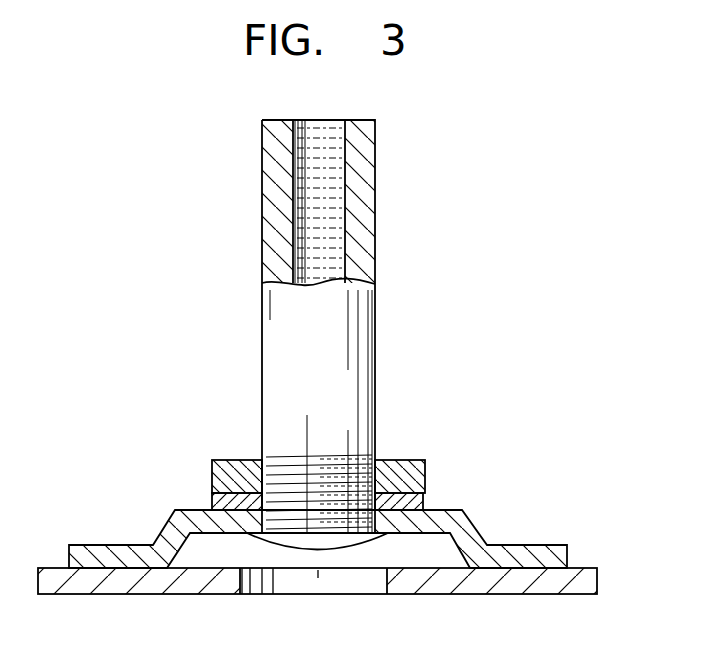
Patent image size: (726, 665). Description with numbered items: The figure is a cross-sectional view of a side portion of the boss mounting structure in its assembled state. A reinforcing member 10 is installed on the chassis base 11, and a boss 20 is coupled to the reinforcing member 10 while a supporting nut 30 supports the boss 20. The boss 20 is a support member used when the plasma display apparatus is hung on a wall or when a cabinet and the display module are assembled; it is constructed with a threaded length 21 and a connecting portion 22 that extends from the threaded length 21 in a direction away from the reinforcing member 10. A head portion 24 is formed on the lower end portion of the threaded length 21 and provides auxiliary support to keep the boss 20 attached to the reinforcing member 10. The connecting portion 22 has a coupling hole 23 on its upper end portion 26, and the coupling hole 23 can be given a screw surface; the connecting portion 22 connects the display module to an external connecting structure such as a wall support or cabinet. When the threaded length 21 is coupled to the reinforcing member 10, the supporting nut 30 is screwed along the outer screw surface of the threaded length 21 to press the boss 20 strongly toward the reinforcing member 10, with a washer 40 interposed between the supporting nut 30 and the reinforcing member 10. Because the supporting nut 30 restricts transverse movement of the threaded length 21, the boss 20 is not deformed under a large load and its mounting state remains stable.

The reinforcing member 10 is at (480, 531).
The chassis base 11 is at (514, 596).
The boss 20 is at (328, 361).
The threaded length 21 is at (364, 456).
The connecting portion 22 is at (362, 330).
The coupling hole 23 is at (319, 175).
The head portion 24 is at (334, 546).
The upper end portion 26 is at (268, 178).
The supporting nut 30 is at (426, 471).
The washer 40 is at (426, 501).